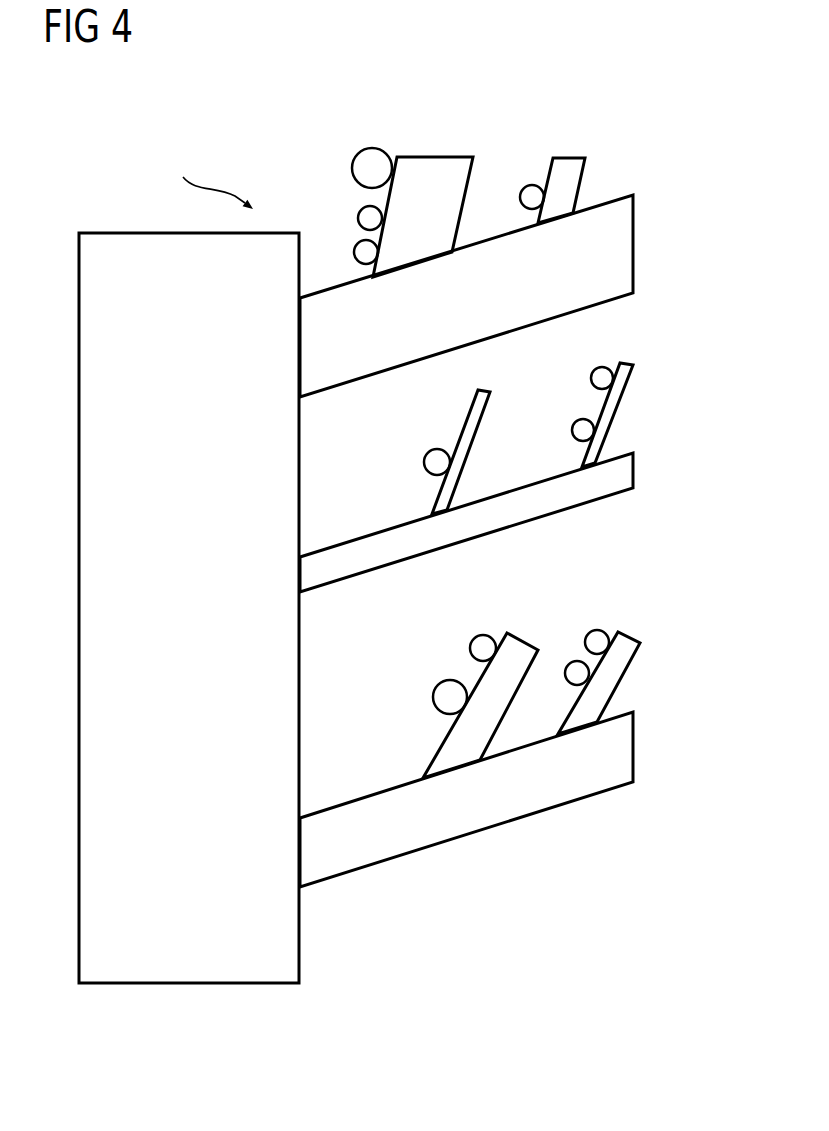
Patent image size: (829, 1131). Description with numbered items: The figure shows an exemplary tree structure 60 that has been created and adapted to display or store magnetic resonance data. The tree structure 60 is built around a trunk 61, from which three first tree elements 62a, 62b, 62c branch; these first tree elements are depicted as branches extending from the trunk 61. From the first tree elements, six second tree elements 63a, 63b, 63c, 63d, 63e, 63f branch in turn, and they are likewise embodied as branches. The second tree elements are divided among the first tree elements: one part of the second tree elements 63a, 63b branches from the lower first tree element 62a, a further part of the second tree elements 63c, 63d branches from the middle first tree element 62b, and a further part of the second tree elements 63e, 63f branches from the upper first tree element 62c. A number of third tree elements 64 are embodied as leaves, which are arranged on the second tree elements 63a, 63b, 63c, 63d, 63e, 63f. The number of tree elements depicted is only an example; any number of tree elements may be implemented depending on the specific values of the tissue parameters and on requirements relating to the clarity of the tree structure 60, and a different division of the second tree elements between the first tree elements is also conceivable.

The tree structure 60 is at (288, 137).
The trunk 61 is at (299, 932).
The lower first tree element 62a is at (633, 743).
The middle first tree element 62b is at (633, 468).
The upper first tree element 62c is at (633, 240).
The second tree element 63a is at (445, 737).
The second tree element 63b is at (643, 640).
The second tree element 63c is at (472, 410).
The second tree element 63d is at (622, 407).
The second tree element 63e is at (435, 156).
The second tree element 63f is at (567, 156).
The third tree element 64 is at (597, 629).